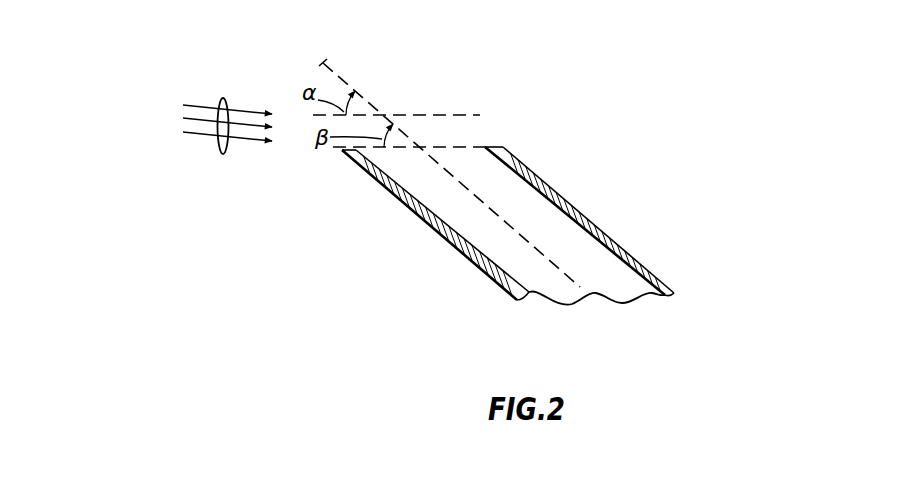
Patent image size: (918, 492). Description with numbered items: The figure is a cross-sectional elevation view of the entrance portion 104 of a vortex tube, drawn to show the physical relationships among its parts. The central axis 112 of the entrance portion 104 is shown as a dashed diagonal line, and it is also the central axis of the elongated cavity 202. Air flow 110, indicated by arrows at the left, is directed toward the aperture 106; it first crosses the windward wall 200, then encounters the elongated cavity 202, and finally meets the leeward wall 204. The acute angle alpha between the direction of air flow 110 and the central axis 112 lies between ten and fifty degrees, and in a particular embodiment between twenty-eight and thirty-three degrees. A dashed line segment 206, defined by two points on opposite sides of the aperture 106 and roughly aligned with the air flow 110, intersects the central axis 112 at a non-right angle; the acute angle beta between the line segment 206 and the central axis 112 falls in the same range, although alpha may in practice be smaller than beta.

The entrance portion 104 is at (498, 228).
The aperture 106 is at (494, 108).
The air flow 110 is at (223, 155).
The central axis 112 is at (326, 62).
The windward wall 200 is at (349, 152).
The elongated cavity 202 is at (580, 257).
The leeward wall 204 is at (538, 175).
The line segment 206 is at (466, 147).